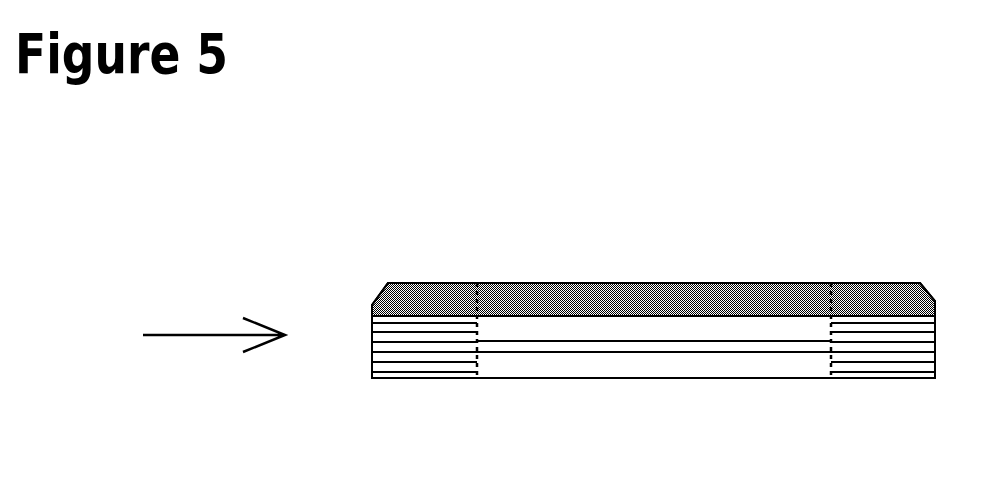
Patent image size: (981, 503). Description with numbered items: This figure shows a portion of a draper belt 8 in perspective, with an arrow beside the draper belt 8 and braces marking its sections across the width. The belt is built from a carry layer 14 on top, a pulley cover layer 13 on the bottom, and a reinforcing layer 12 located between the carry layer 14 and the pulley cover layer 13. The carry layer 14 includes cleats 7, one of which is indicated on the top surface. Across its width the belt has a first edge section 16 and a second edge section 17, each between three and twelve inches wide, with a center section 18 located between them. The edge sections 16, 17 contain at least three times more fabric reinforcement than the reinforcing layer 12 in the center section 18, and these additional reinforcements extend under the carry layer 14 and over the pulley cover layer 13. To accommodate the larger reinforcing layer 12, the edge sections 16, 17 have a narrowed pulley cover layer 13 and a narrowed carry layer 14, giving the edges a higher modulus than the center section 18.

The cleat 7 is at (633, 298).
The draper belt 8 is at (200, 335).
The reinforcing layer 12 is at (542, 348).
The pulley cover layer 13 is at (802, 372).
The carry layer 14 is at (747, 325).
The first edge section 16 is at (477, 383).
The second edge section 17 is at (932, 383).
The center section 18 is at (479, 383).